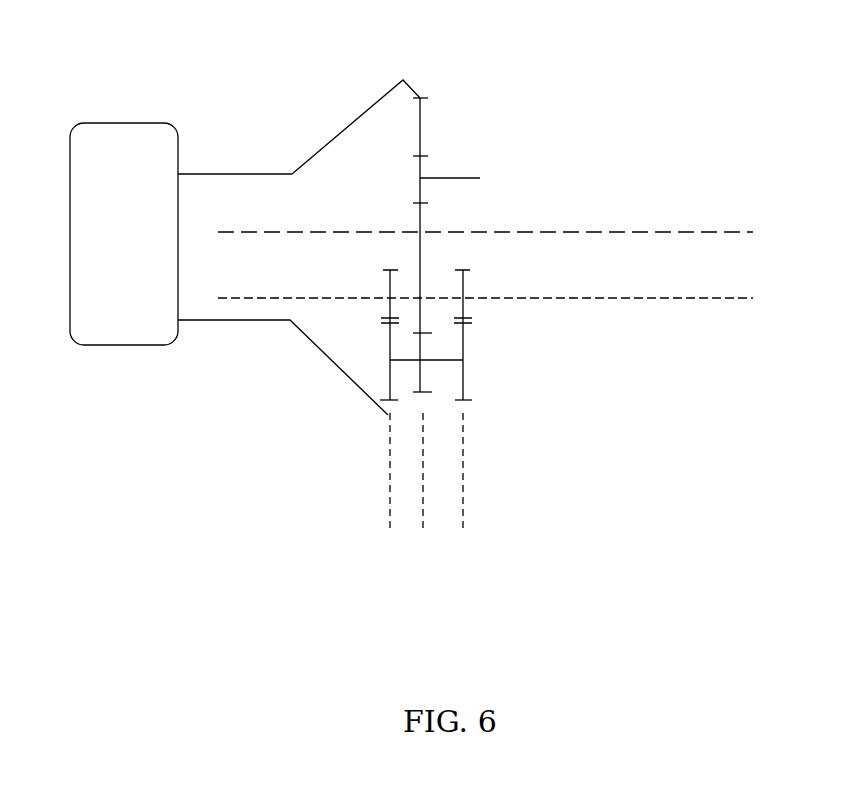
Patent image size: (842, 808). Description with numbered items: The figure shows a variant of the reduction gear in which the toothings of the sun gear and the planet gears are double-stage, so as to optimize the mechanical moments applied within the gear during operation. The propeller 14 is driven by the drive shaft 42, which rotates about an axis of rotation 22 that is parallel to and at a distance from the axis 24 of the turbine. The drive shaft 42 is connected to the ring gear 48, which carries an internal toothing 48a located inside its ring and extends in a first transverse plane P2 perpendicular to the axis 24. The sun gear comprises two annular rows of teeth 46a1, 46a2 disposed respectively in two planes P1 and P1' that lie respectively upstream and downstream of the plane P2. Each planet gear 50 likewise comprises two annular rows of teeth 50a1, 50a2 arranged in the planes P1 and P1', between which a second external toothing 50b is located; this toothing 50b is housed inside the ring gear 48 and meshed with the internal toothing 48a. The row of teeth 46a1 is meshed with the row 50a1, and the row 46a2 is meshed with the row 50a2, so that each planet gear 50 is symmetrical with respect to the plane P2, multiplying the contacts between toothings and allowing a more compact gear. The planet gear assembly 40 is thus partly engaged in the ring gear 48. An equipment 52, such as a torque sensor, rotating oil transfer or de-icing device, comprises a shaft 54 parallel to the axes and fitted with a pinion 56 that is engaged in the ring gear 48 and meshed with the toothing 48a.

The propeller 14 is at (118, 122).
The axis of rotation 22 is at (257, 230).
The axis of the turbine 24 is at (623, 298).
The piston assembly 40 is at (474, 306).
The drive shaft 42 is at (330, 152).
The row of teeth 46a1 is at (470, 270).
The row of teeth 46a2 is at (383, 270).
The ring gear 48 is at (433, 84).
The internal toothing 48a is at (418, 99).
The planet gear 50 is at (501, 363).
The row of teeth 50a1 is at (465, 405).
The row of teeth 50a2 is at (383, 412).
The second external toothing 50b is at (424, 400).
The equipment 52 is at (468, 160).
The shaft 54 is at (467, 197).
The pinion 56 is at (413, 204).
The plane P1' is at (338, 483).
The first transverse plane P2 is at (425, 530).
The second transverse plane P1 is at (515, 492).